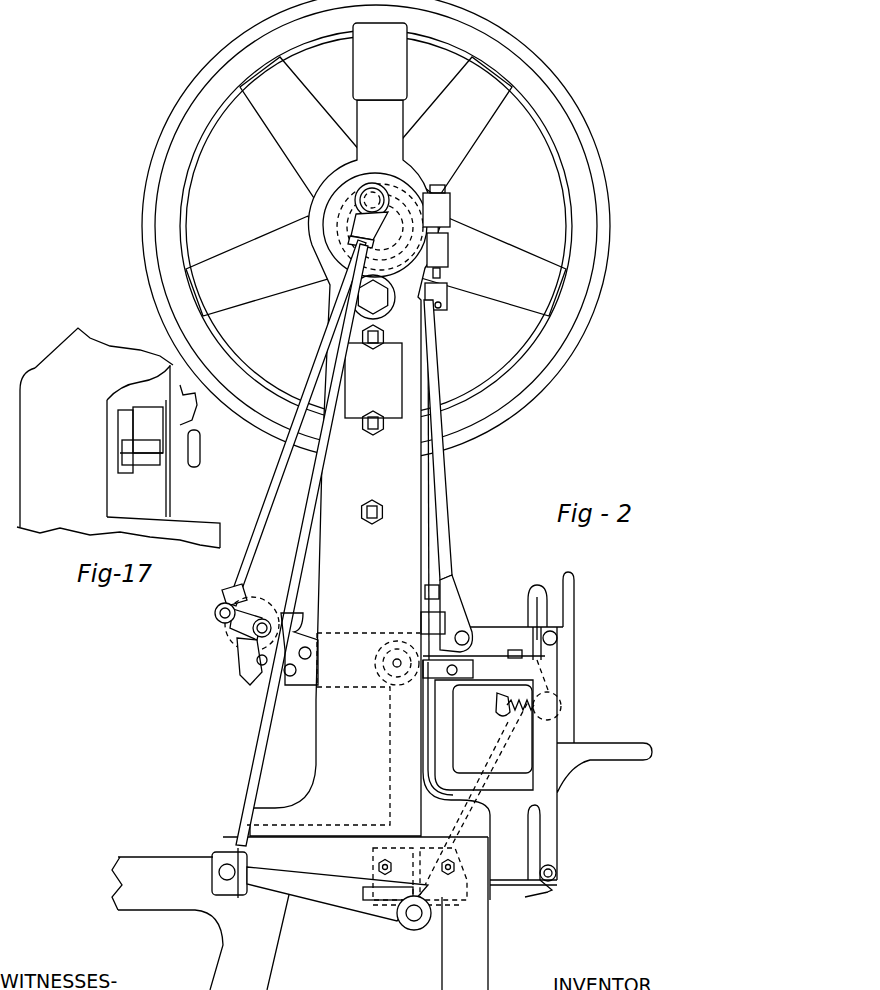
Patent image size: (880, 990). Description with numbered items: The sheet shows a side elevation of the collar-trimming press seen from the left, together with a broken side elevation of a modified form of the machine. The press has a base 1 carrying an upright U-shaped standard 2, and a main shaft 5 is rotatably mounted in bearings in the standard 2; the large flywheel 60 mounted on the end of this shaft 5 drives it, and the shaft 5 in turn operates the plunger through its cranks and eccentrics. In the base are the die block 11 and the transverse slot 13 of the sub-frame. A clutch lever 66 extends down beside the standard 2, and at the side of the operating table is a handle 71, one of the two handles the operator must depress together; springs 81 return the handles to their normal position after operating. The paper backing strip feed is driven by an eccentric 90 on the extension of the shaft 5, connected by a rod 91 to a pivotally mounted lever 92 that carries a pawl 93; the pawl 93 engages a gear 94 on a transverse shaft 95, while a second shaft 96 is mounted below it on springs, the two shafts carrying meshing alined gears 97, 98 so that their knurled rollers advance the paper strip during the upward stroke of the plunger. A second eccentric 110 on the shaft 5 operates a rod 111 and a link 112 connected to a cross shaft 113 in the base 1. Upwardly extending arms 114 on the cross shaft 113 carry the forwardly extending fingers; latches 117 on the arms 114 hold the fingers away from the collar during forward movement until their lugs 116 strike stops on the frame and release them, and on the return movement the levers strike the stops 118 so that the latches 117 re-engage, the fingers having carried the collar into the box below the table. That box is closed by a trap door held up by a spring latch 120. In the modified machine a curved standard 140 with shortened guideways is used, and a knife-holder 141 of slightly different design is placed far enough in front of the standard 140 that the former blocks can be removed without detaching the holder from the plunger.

In FIG. 2, the base 1 is at (132, 878).
In FIG. 2, the upright U-shaped standard 2 is at (398, 556).
In FIG. 2, the shaft 5 is at (387, 230).
In FIG. 2, the die block 11 is at (365, 633).
In FIG. 2, the slot 13 is at (388, 636).
In FIG. 2, the flywheel 60 is at (607, 221).
In FIG. 2, the clutch lever 66 is at (442, 492).
In FIG. 2, the handle 71 is at (545, 602).
In FIG. 2, the springs 81 is at (533, 652).
In FIG. 2, the eccentric 90 is at (403, 200).
In FIG. 2, the rod 91 is at (275, 492).
In FIG. 2, the lever 92 is at (235, 640).
In FIG. 2, the pawl 93 is at (248, 600).
In FIG. 2, the gear 94 is at (278, 607).
In FIG. 2, the shaft 95 is at (262, 634).
In FIG. 2, the second shaft 96 is at (262, 662).
In FIG. 2, the gear 97 is at (248, 652).
In FIG. 2, the gear 98 is at (268, 700).
In FIG. 2, the second eccentric 110 is at (382, 186).
In FIG. 2, the rod 111 is at (313, 468).
In FIG. 2, the link 112 is at (307, 882).
In FIG. 2, the cross shaft 113 is at (413, 921).
In FIG. 2, the arms 114 is at (507, 743).
In FIG. 2, the lugs 116 is at (500, 700).
In FIG. 2, the latches 117 is at (507, 722).
In FIG. 2, the stops 118 is at (560, 706).
In FIG. 2, the spring latch 120 is at (556, 874).
In FIG. 17, the curved standard 140 is at (118, 438).
In FIG. 17, the knife-holder 141 is at (120, 428).